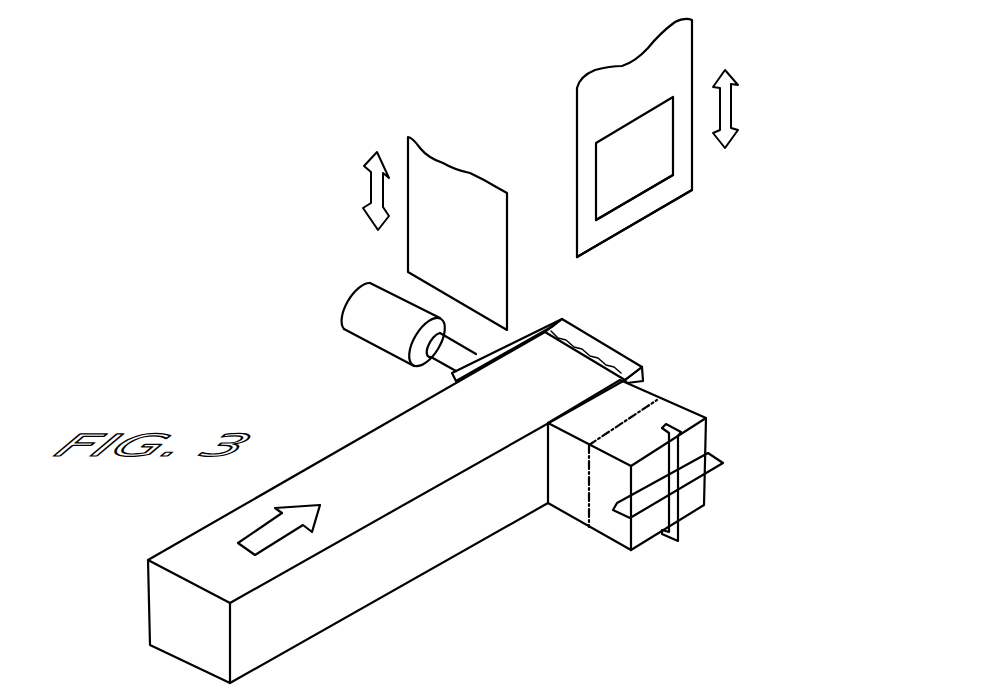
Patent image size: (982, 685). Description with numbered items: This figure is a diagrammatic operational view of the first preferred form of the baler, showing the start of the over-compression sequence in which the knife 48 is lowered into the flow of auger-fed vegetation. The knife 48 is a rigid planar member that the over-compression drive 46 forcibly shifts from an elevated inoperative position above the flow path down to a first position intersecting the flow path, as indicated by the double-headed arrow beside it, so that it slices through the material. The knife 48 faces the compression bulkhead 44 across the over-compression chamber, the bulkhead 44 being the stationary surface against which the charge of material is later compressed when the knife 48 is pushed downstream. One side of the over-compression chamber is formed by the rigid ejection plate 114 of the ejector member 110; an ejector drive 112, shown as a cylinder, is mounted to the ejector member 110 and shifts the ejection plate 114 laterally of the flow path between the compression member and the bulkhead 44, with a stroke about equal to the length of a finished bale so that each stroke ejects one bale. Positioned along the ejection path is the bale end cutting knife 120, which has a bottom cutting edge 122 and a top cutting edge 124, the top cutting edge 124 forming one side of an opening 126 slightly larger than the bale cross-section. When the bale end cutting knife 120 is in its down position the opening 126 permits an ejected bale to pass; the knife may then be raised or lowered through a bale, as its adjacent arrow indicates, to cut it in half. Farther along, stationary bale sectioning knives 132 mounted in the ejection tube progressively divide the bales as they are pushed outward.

The compression bulkhead 44 is at (612, 360).
The over-compression drive 46 is at (412, 214).
The knife 48 is at (406, 262).
The ejector member 110 is at (433, 366).
The ejector drive 112 is at (355, 322).
The ejection plate 114 is at (539, 322).
The bale end cutting knife 120 is at (686, 43).
The bottom cutting edge 122 is at (662, 207).
The top cutting edge 124 is at (617, 208).
The opening 126 is at (602, 163).
The bale sectioning knives 132 is at (677, 457).